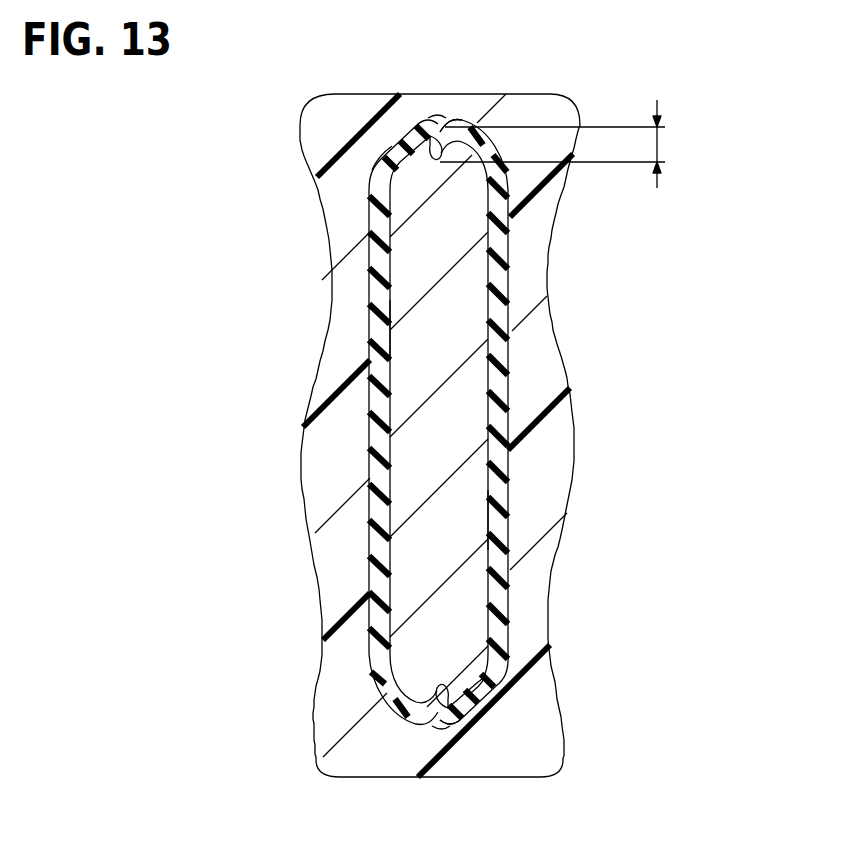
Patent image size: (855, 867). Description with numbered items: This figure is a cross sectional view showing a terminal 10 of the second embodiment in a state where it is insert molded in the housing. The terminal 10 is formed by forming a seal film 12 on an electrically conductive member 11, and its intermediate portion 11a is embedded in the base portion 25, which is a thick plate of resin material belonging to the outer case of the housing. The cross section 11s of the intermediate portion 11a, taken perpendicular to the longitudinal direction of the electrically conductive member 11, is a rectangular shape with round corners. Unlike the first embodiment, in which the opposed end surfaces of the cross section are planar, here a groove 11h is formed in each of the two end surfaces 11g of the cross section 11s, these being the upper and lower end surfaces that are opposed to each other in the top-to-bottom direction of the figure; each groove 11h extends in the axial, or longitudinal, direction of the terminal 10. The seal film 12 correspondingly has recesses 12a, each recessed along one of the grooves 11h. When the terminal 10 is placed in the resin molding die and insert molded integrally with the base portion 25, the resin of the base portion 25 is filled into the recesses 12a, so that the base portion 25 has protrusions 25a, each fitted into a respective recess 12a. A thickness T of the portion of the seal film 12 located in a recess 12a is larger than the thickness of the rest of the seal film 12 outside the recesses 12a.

The terminal 10 is at (461, 436).
The electrically conductive member 11 is at (431, 436).
The intermediate portion 11a is at (410, 326).
The end surface 11g is at (425, 148).
The groove 11h is at (385, 182).
The cross section 11s is at (468, 520).
The seal film 12 is at (545, 436).
The recess 12a is at (452, 125).
The base portion 25 is at (318, 398).
The protrusion 25a is at (438, 120).
The thickness T is at (657, 145).